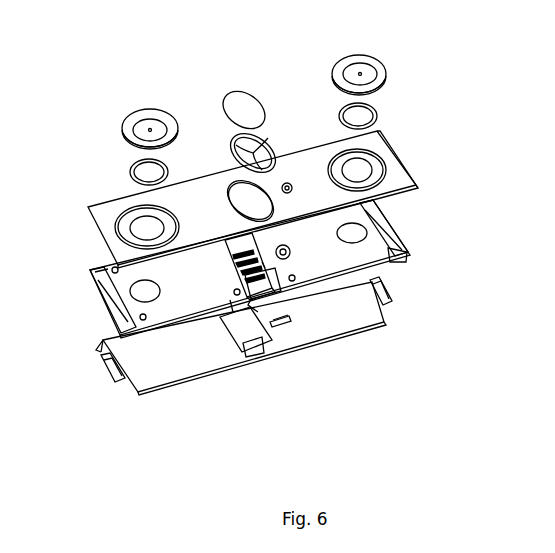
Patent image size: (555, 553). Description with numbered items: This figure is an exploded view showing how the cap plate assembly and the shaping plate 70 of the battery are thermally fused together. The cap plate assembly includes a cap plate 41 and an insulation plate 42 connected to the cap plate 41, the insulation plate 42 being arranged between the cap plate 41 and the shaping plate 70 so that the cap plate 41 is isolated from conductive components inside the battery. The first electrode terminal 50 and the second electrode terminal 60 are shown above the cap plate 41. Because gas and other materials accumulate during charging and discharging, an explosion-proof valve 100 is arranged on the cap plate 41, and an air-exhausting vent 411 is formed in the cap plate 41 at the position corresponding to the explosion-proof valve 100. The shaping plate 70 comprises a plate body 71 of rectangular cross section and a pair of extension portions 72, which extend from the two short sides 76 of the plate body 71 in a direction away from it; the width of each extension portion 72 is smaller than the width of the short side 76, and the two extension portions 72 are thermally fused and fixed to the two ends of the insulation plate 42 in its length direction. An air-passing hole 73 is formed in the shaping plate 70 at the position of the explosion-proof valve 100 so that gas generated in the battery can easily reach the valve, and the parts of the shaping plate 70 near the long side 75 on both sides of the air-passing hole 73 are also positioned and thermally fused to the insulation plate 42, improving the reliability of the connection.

The cap plate 41 is at (401, 170).
The air-exhausting vent 411 is at (243, 195).
The insulation plate 42 is at (403, 217).
The first electrode terminal 50 is at (125, 119).
The second electrode terminal 60 is at (374, 62).
The shaping plate 70 is at (249, 359).
The plate body 71 is at (340, 320).
The extension portion 72 is at (120, 378).
The air-passing hole 73 is at (245, 342).
The long side 75 is at (310, 344).
The short side 76 is at (101, 352).
The explosion-proof valve 100 is at (268, 148).